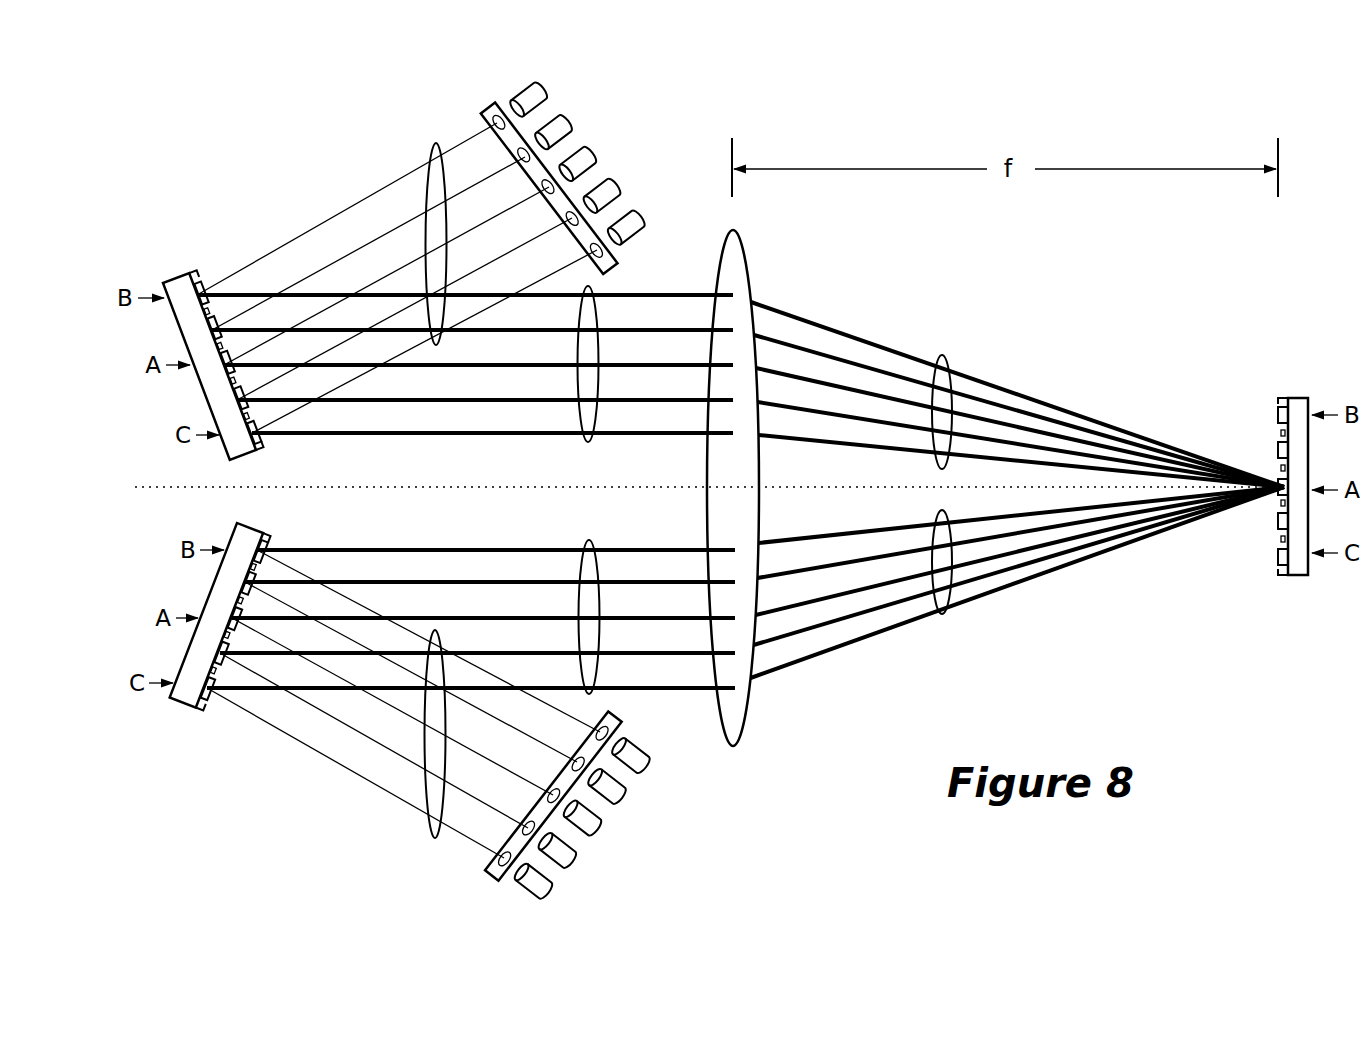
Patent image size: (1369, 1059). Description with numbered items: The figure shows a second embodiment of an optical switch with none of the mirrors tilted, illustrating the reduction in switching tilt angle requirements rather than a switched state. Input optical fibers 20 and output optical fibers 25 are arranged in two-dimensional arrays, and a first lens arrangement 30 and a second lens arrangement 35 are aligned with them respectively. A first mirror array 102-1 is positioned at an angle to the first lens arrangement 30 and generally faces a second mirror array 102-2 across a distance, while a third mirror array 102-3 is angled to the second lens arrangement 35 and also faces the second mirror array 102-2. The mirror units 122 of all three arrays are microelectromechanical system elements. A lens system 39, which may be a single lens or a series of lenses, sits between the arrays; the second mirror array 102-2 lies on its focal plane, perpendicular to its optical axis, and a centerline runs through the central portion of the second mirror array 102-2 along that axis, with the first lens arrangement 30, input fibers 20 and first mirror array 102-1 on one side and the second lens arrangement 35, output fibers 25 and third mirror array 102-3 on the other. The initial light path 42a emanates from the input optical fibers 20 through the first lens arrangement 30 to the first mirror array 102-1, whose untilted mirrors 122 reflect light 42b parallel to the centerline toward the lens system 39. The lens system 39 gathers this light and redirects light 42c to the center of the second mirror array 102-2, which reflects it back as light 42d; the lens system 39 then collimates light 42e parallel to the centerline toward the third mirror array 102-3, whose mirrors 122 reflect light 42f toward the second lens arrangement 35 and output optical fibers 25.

The input optical fibers 20 is at (521, 89).
The output optical fibers 25 is at (525, 893).
The first lens arrangement 30 is at (482, 101).
The second lens arrangement 35 is at (487, 880).
The lens system 39 is at (704, 520).
The initial light path 42a is at (437, 140).
The reflected light of the first mirror array 42b is at (588, 445).
The redirected light 42c is at (942, 352).
The light reflected back toward the lens system 42d is at (942, 617).
The collimated light toward the third mirror array 42e is at (589, 539).
The light toward the second lens arrangement 42f is at (435, 841).
The first mirror array 102-1 is at (170, 274).
The second mirror array 102-2 is at (1297, 396).
The third mirror array 102-3 is at (172, 709).
The mirror units 122 is at (201, 281).